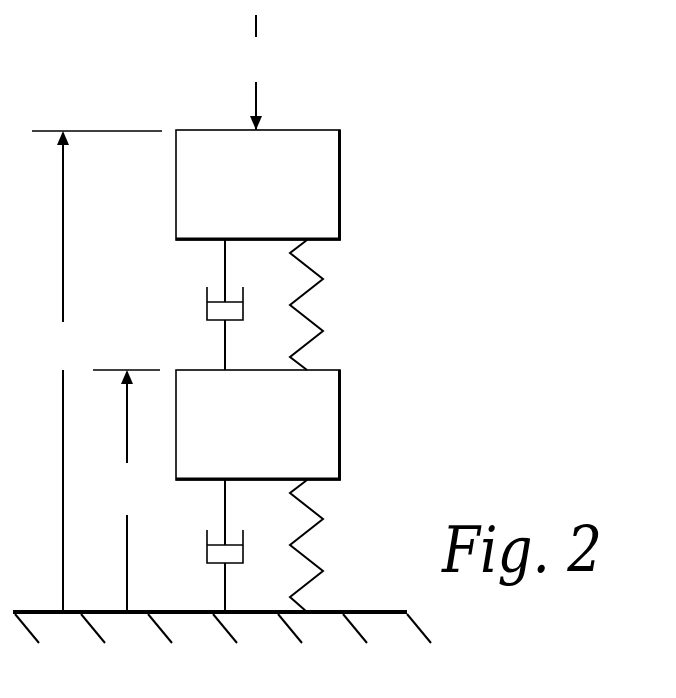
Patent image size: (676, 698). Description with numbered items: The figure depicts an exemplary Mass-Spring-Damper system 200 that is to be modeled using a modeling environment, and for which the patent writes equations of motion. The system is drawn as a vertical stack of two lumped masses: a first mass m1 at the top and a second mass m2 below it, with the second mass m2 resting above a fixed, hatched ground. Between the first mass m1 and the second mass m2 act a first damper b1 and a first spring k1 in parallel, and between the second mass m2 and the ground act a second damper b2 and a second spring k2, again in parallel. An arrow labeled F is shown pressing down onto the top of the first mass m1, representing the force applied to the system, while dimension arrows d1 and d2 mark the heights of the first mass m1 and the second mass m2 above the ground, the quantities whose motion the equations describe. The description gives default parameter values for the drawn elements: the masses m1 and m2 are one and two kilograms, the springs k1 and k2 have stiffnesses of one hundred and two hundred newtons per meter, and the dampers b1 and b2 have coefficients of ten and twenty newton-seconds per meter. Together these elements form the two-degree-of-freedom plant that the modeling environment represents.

The Mass-Spring-Damper system 200 is at (239, 329).
The applied force F is at (256, 72).
The first mass m1 is at (233, 200).
The second mass m2 is at (235, 447).
The first damper b1 is at (201, 305).
The second damper b2 is at (201, 546).
The first spring k1 is at (324, 305).
The second spring k2 is at (325, 546).
The displacement of first mass d1 is at (97, 371).
The displacement of second mass d2 is at (126, 491).